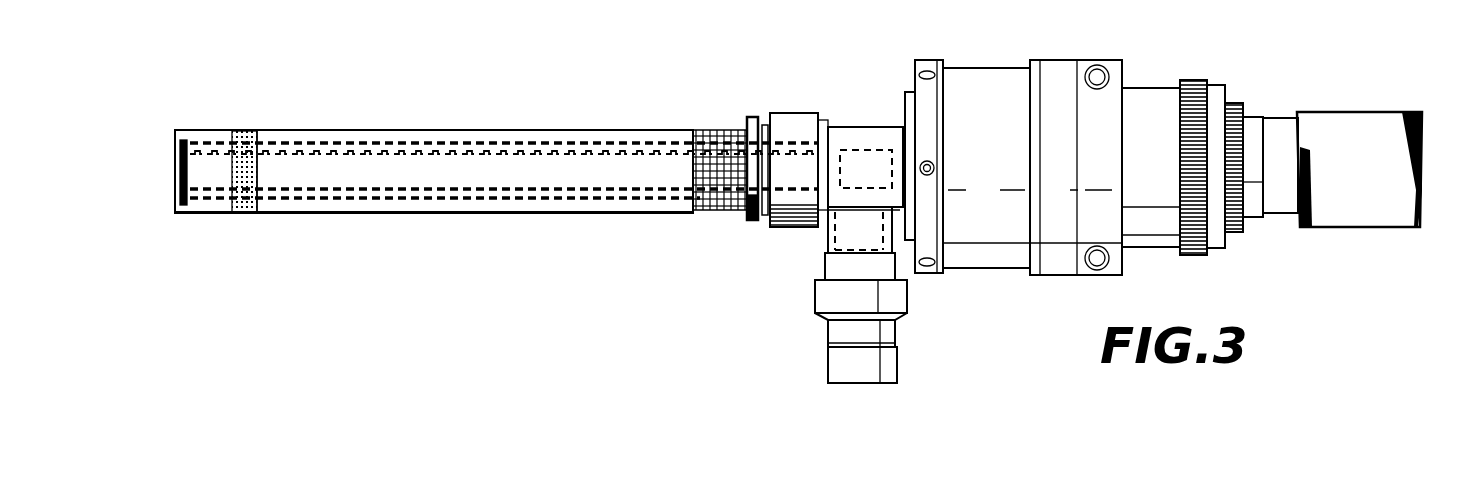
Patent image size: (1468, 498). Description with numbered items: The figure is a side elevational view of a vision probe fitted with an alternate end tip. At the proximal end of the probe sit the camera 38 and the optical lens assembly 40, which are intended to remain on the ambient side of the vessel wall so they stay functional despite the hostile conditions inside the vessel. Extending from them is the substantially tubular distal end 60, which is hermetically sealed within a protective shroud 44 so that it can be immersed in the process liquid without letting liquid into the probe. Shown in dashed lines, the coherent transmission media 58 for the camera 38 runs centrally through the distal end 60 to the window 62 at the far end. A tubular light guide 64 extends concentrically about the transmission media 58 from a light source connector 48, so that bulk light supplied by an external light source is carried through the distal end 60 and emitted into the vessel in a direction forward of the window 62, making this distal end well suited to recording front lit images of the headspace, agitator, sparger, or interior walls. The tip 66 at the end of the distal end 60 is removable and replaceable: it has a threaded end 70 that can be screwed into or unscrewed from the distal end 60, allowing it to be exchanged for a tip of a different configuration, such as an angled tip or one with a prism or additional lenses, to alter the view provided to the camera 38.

The camera 38 is at (1365, 213).
The optical lens assembly 40 is at (1148, 95).
The protective shroud 44 is at (320, 208).
The light source connector 48 is at (897, 370).
The coherent transmission media 58 is at (437, 175).
The distal end 60 is at (817, 107).
The window 62 is at (178, 177).
The light guide 64 is at (530, 195).
The tip 66 is at (213, 208).
The threaded end 70 is at (245, 207).